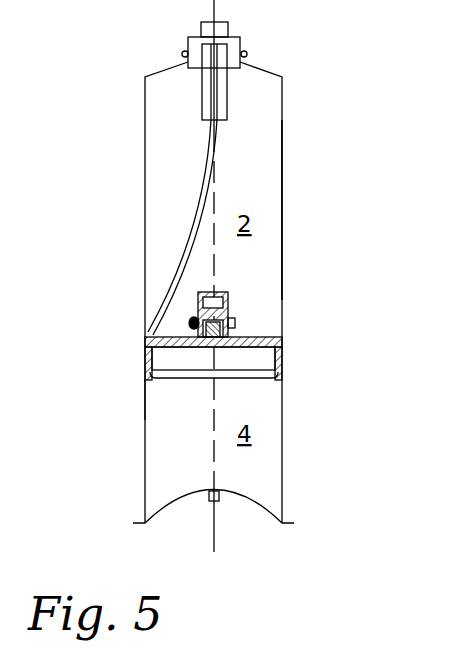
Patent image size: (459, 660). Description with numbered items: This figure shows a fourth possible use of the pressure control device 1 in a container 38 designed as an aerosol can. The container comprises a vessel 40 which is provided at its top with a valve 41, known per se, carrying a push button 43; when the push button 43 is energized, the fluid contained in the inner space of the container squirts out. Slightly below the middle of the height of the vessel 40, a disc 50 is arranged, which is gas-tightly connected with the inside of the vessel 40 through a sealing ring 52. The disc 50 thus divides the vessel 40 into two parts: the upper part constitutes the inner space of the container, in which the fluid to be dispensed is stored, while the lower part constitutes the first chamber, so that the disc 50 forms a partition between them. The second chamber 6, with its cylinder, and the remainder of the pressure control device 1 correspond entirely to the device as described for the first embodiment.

The pressure control device 1 is at (167, 387).
The second chamber 6 is at (228, 300).
The container 38 is at (267, 172).
The vessel 40 is at (282, 195).
The valve 41 is at (231, 58).
The push button 43 is at (228, 28).
The disc 50 is at (282, 338).
The sealing ring 52 is at (282, 358).